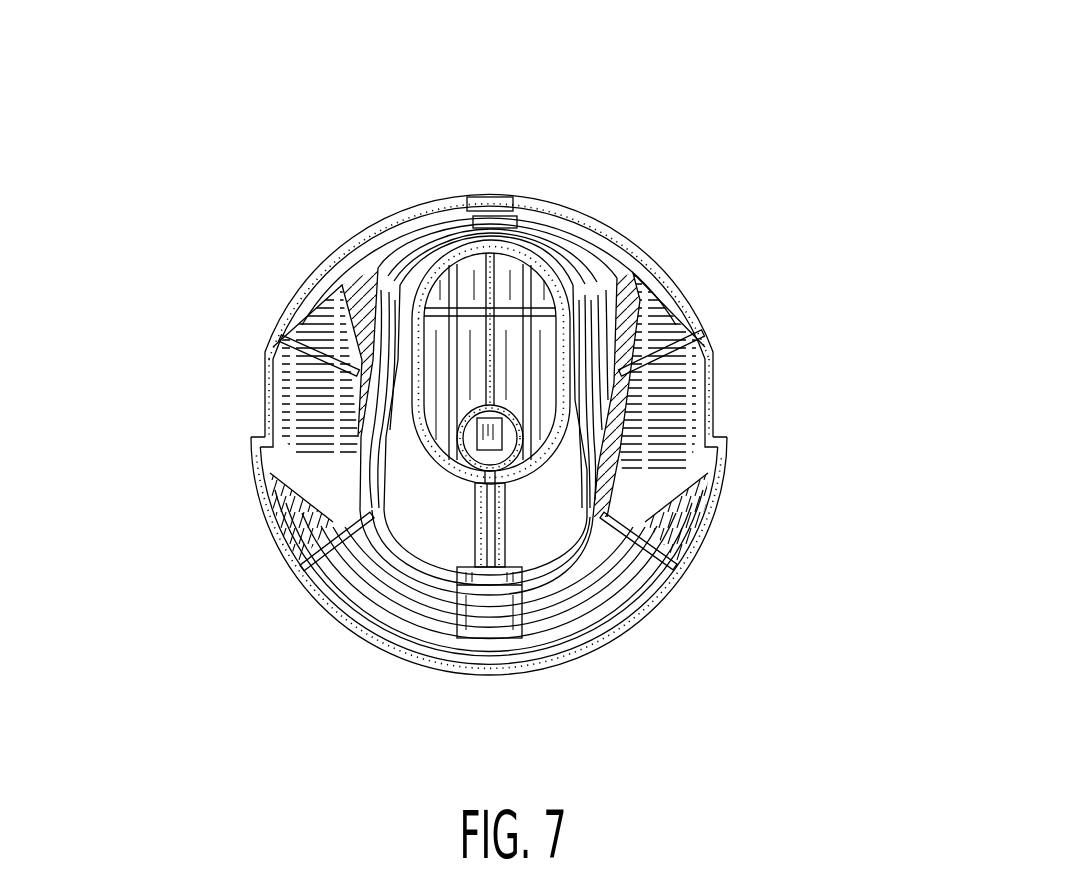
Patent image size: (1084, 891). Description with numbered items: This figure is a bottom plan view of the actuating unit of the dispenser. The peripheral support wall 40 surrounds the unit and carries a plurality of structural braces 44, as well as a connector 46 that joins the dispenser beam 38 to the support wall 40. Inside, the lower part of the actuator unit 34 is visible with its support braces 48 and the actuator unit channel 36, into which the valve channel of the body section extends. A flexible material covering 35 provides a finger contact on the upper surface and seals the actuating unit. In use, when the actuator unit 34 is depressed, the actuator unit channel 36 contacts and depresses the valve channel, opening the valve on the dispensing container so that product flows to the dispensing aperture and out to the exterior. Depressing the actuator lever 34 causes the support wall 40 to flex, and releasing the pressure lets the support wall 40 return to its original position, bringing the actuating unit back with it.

The actuator unit 34 is at (548, 272).
The flexible material covering 35 is at (540, 533).
The actuator unit channel 36 is at (520, 456).
The dispenser beam 38 is at (468, 545).
The peripheral support wall 40 is at (728, 468).
The structural braces 44 is at (683, 330).
The connector 46 is at (527, 598).
The support braces 48 is at (470, 273).